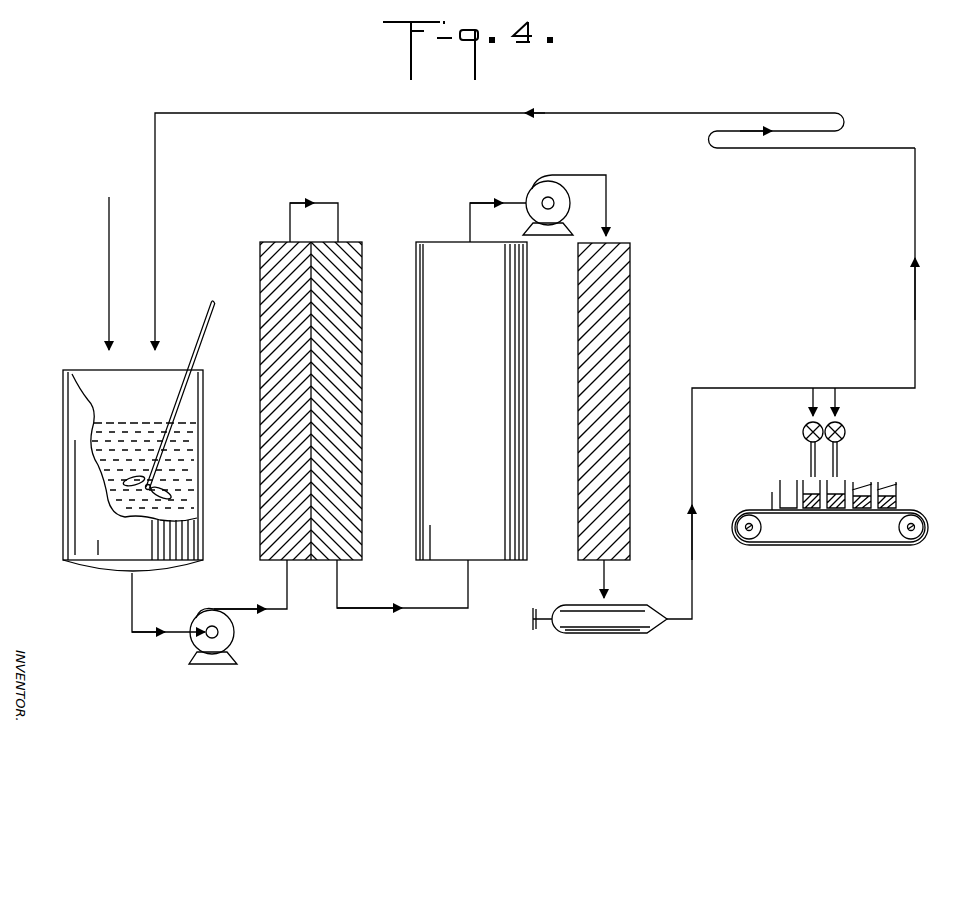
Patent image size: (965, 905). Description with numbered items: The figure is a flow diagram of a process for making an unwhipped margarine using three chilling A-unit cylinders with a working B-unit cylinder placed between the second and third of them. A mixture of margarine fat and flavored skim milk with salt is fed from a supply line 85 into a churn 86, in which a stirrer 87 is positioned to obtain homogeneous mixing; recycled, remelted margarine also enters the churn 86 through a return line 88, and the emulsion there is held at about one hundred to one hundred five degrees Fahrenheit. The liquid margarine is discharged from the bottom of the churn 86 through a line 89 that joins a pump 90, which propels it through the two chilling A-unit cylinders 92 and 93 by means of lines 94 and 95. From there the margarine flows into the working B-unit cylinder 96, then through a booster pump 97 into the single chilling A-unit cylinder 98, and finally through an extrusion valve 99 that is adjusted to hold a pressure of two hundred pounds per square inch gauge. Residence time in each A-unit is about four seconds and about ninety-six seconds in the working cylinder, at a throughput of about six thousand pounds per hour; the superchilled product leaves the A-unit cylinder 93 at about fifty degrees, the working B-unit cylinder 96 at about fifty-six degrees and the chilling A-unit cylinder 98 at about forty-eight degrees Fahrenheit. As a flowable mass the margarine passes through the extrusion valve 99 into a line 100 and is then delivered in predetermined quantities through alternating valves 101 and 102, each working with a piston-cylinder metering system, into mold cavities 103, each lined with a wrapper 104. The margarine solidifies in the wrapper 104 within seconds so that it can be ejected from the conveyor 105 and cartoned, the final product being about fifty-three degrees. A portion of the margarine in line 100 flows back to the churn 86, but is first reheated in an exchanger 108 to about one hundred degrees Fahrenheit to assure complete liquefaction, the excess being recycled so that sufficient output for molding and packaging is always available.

The supply line 85 is at (109, 250).
The churn 86 is at (63, 428).
The stirrer 87 is at (204, 320).
The return line 88 is at (154, 181).
The line 89 is at (132, 611).
The pump 90 is at (192, 645).
The chilling A-unit cylinder 92 is at (309, 399).
The chilling A-unit cylinder 93 is at (350, 386).
The line 94 is at (256, 609).
The line 95 is at (314, 203).
The working B-unit cylinder 96 is at (420, 432).
The booster pump 97 is at (530, 192).
The chilling A-unit cylinder 98 is at (622, 300).
The extrusion valve 99 is at (612, 633).
The line 100 is at (692, 591).
The alternating valve 101 is at (802, 428).
The alternating valve 102 is at (846, 431).
The mold cavity 103 is at (755, 508).
The wrapper 104 is at (780, 486).
The conveyor 105 is at (821, 514).
The exchanger 108 is at (787, 131).